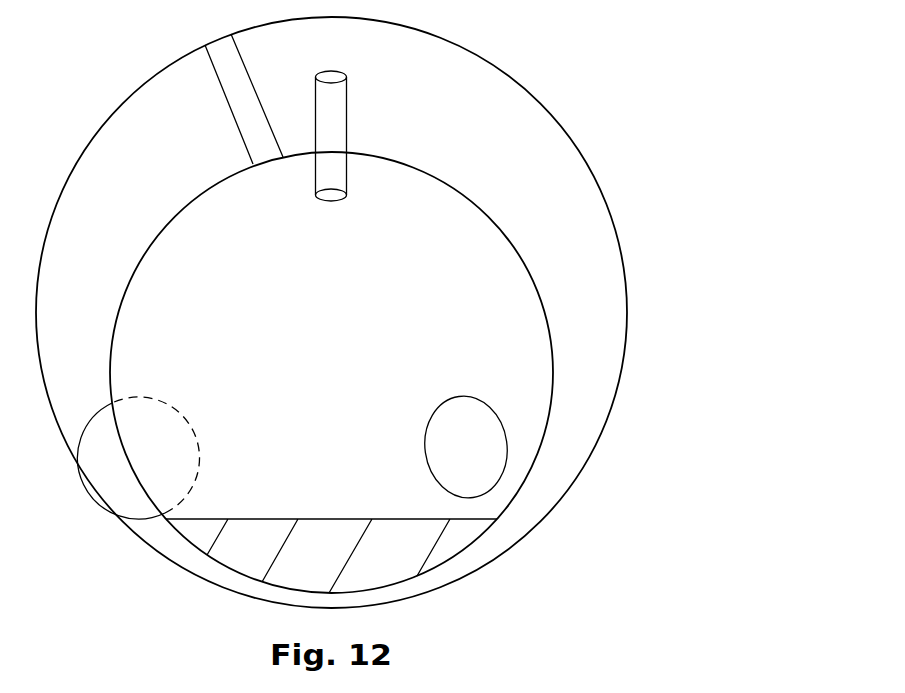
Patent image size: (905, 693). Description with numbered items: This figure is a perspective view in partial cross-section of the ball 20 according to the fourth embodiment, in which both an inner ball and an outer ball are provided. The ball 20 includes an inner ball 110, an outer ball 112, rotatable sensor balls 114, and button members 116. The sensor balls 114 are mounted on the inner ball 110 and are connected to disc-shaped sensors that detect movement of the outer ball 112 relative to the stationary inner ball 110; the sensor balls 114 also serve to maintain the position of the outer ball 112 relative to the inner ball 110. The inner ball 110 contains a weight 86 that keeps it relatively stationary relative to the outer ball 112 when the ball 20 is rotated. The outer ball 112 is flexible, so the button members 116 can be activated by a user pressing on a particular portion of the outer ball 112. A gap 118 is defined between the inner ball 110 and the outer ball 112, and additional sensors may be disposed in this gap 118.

The ball 20 is at (647, 31).
The weight 86 is at (382, 563).
The inner ball 110 is at (400, 230).
The outer ball 112 is at (625, 283).
The rotatable sensor balls 114 is at (447, 435).
The button members 116 is at (330, 112).
The gap 118 is at (588, 351).